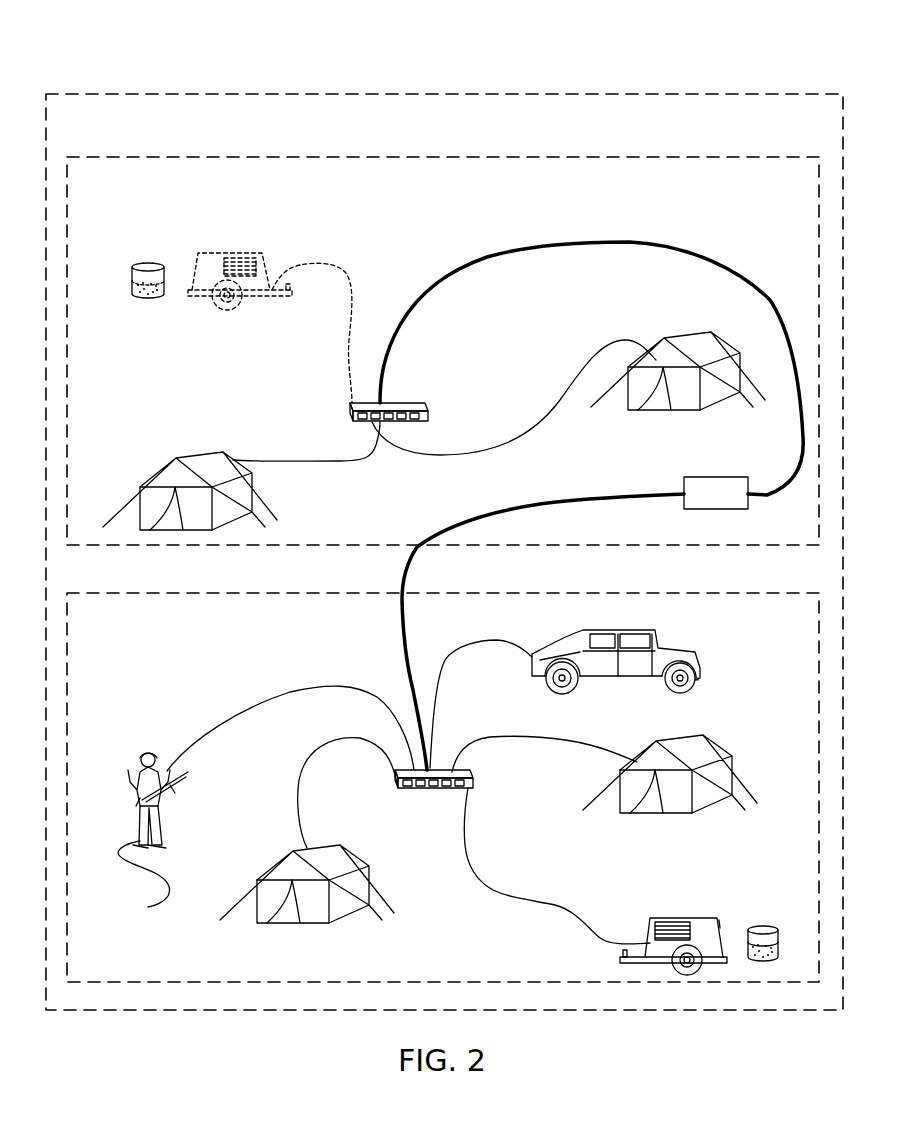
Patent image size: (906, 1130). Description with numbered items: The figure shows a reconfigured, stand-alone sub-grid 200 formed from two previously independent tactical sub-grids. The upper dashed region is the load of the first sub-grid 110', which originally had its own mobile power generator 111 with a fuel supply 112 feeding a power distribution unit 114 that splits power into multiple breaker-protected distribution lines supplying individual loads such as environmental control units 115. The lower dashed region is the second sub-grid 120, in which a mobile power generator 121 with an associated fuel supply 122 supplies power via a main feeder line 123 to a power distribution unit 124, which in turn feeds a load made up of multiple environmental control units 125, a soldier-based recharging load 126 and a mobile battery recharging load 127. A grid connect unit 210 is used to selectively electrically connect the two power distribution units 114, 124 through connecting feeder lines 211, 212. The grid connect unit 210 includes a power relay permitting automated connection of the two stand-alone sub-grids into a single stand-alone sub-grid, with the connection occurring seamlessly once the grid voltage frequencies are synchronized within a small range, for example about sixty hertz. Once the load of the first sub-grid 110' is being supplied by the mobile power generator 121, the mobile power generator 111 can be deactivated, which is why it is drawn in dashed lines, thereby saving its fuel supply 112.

The reconfigured stand-alone sub-grid 200 is at (222, 94).
The first sub-grid 110' is at (445, 326).
The second sub-grid 120 is at (720, 593).
The mobile power generator 111 is at (230, 253).
The fuel supply 112 is at (148, 263).
The power distribution unit 114 is at (418, 403).
The environmental control unit 115 is at (223, 452).
The grid connect unit 210 is at (709, 477).
The connecting feeder line 211 is at (546, 246).
The connecting feeder line 212 is at (614, 497).
The mobile power generator 121 is at (684, 918).
The fuel supply 122 is at (763, 926).
The main feeder line 123 is at (492, 890).
The power distribution unit 124 is at (398, 783).
The environmental control unit 125 is at (350, 855).
The soldier-based recharging load 126 is at (168, 896).
The mobile battery recharging load 127 is at (560, 632).